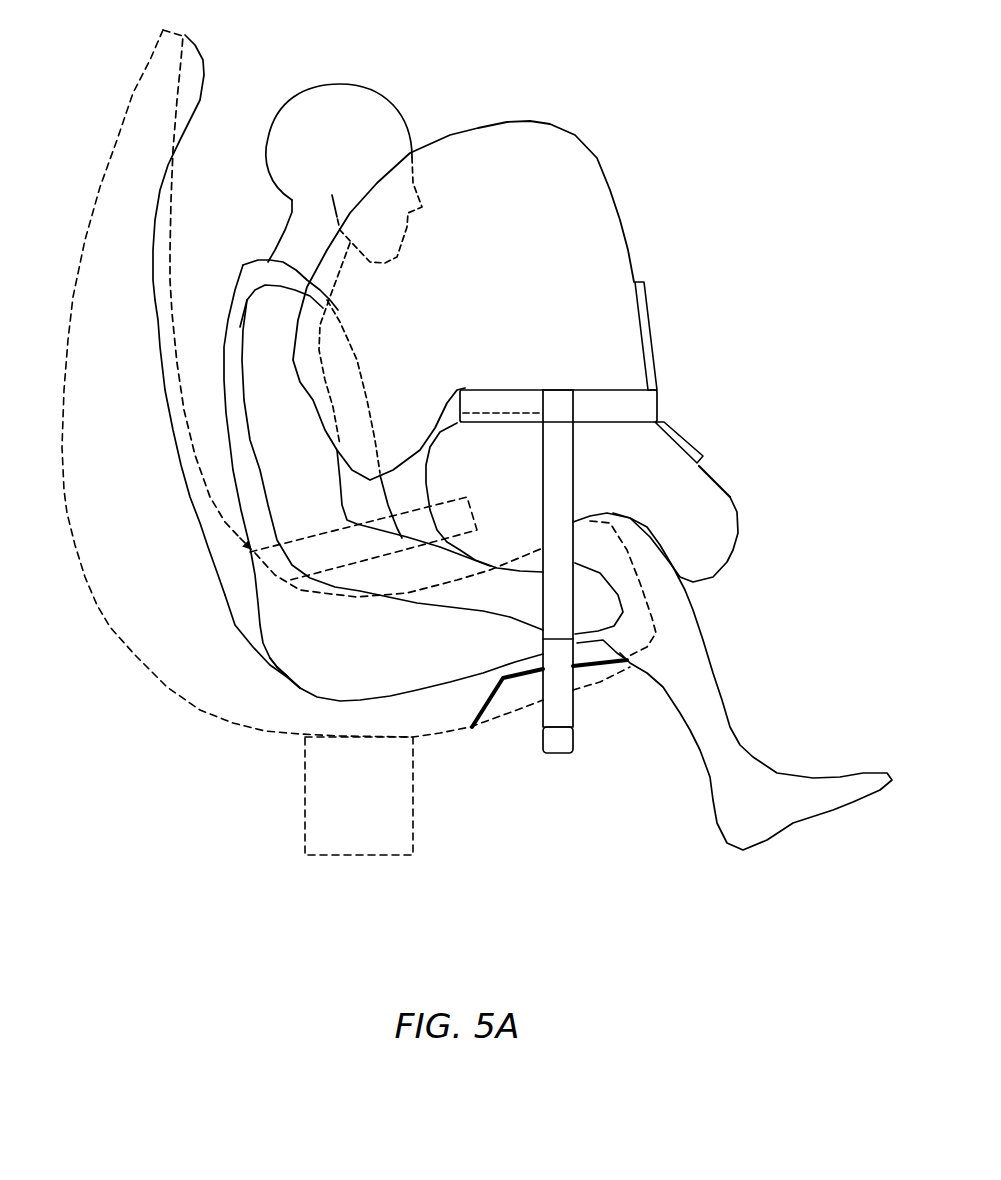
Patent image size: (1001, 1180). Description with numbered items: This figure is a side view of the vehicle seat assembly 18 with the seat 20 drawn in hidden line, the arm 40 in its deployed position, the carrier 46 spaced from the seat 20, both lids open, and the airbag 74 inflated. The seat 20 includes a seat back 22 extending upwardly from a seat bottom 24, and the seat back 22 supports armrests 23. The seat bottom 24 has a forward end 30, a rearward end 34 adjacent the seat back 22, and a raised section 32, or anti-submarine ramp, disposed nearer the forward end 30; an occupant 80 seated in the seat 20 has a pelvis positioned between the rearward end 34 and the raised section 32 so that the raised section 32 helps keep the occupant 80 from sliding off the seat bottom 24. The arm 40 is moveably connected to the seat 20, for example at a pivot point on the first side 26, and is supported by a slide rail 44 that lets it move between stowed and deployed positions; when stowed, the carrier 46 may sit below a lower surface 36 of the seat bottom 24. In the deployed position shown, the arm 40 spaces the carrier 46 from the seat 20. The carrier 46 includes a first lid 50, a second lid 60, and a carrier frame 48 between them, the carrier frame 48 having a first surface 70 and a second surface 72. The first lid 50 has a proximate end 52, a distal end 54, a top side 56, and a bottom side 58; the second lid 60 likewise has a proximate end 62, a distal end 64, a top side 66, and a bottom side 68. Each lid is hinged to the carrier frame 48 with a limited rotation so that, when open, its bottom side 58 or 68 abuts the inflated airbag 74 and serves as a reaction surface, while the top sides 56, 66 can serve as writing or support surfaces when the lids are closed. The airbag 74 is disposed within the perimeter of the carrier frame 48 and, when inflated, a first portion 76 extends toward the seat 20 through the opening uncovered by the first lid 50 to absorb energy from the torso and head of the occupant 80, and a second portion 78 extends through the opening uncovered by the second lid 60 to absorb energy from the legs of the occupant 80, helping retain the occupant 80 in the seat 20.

The vehicle seat assembly 18 is at (708, 132).
The seat 20 is at (60, 453).
The seat back 22 is at (134, 91).
The armrests 23 is at (413, 505).
The seat bottom 24 is at (430, 739).
The first side 26 is at (338, 668).
The forward end 30 is at (618, 640).
The raised section 32 is at (508, 682).
The rearward end 34 is at (284, 677).
The lower surface 36 is at (600, 681).
The arm 40 is at (541, 493).
The slide rail 44 is at (576, 718).
The carrier 46 is at (748, 328).
The carrier frame 48 is at (624, 419).
The first lid 50 is at (657, 344).
The proximate end 52 is at (636, 281).
The distal end 54 is at (657, 389).
The top side 56 is at (650, 313).
The bottom side 58 is at (629, 330).
The second lid 60 is at (705, 449).
The proximate end 62 is at (703, 465).
The distal end 64 is at (660, 420).
The top side 66 is at (684, 438).
The bottom side 68 is at (664, 448).
The first surface 70 is at (518, 387).
The second surface 72 is at (503, 426).
The airbag 74 is at (547, 124).
The first portion 76 is at (484, 243).
The second portion 78 is at (659, 511).
The occupant 80 is at (284, 345).